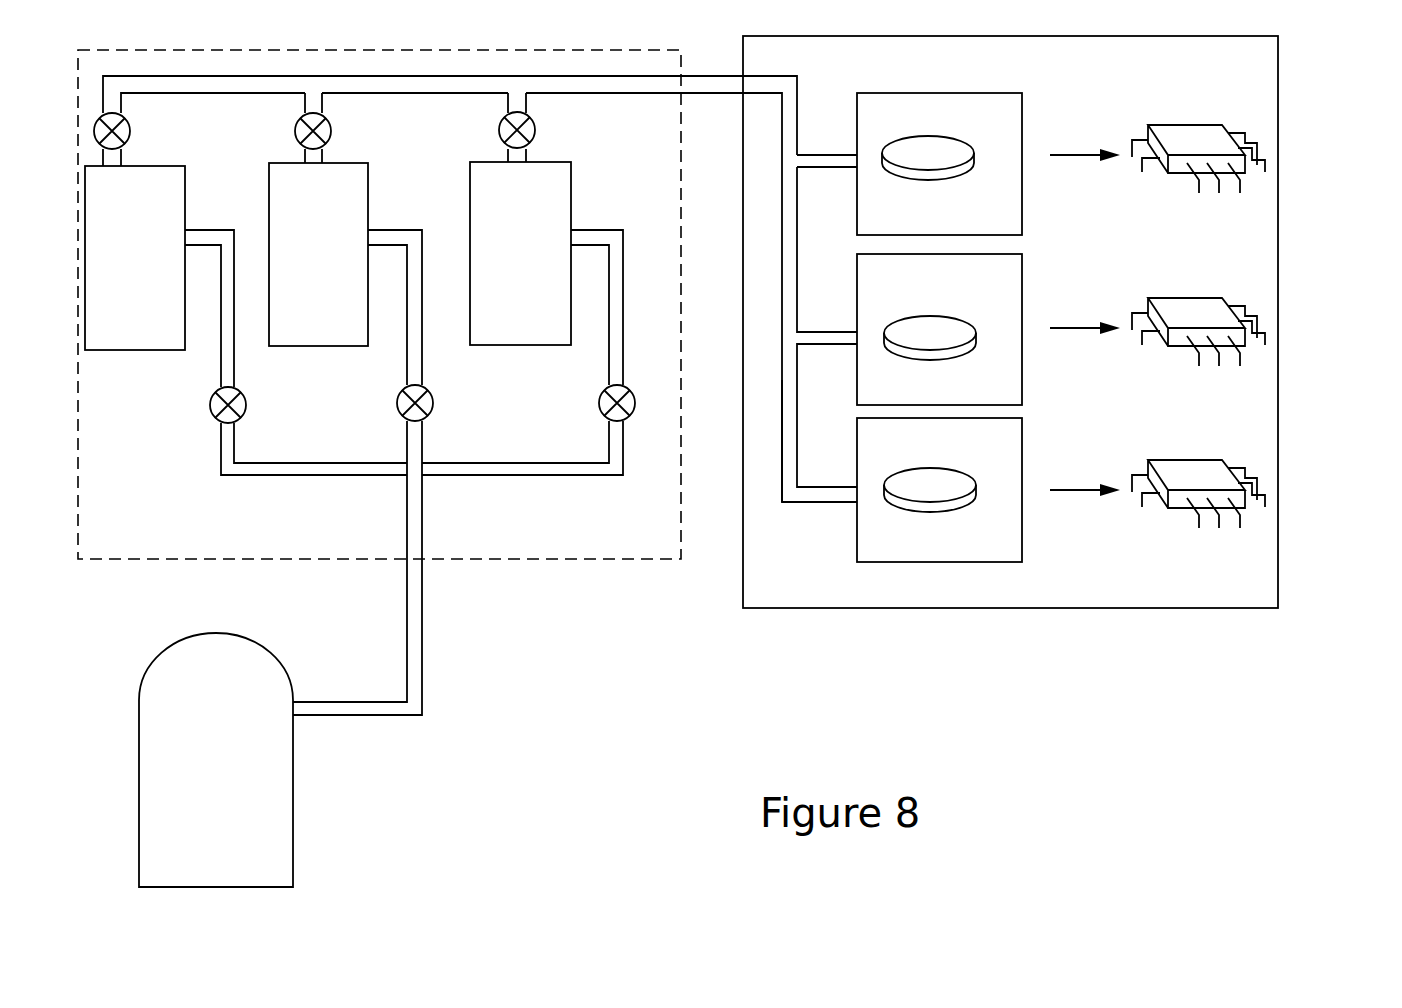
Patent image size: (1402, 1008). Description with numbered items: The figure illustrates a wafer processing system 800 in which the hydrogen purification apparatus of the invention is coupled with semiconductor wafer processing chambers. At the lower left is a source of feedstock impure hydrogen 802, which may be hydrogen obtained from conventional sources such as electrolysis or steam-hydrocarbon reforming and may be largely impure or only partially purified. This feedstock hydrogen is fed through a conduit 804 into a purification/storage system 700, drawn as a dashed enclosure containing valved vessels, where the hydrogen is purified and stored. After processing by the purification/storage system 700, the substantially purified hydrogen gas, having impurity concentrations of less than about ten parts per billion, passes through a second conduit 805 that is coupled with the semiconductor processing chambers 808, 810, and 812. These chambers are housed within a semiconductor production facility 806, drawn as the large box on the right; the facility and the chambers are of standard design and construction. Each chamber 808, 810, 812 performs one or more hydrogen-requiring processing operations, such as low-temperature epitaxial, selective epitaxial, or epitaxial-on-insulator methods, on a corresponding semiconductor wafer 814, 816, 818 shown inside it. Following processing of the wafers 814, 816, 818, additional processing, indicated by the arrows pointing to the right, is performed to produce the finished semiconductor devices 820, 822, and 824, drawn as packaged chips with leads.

The purification/storage system 700 is at (588, 580).
The wafer processing system 800 is at (1312, 171).
The source of feedstock impure hydrogen 802 is at (196, 657).
The conduit 804 is at (418, 645).
The second conduit 805 is at (738, 87).
The semiconductor production facility 806 is at (742, 176).
The semiconductor processing chamber 808 is at (857, 540).
The semiconductor processing chamber 810 is at (857, 355).
The semiconductor processing chamber 812 is at (857, 175).
The semiconductor wafer 814 is at (930, 518).
The semiconductor wafer 816 is at (930, 366).
The semiconductor wafer 818 is at (928, 187).
The finished semiconductor device 820 is at (1157, 508).
The finished semiconductor device 822 is at (1157, 342).
The finished semiconductor device 824 is at (1187, 173).